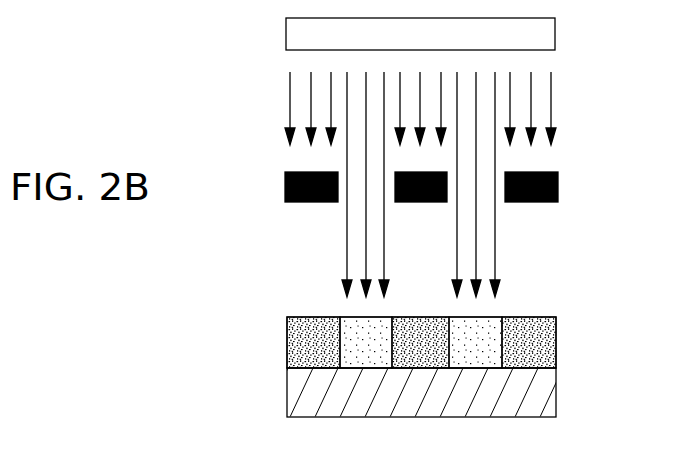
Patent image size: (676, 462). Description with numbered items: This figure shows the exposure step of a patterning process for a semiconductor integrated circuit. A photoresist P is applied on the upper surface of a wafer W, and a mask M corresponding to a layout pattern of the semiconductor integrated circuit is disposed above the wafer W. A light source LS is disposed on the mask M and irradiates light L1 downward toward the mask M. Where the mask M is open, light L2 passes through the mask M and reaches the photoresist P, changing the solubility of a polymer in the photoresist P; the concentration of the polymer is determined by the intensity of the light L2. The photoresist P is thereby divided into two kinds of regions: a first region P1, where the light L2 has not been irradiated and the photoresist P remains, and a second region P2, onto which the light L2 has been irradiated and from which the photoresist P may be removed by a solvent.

The light source LS is at (286, 33).
The light L1 is at (568, 65).
The light passing through the mask L2 is at (568, 205).
The mask M is at (285, 190).
The photoresist P is at (232, 280).
The first region P1 is at (287, 333).
The second region P2 is at (362, 323).
The wafer W is at (290, 393).